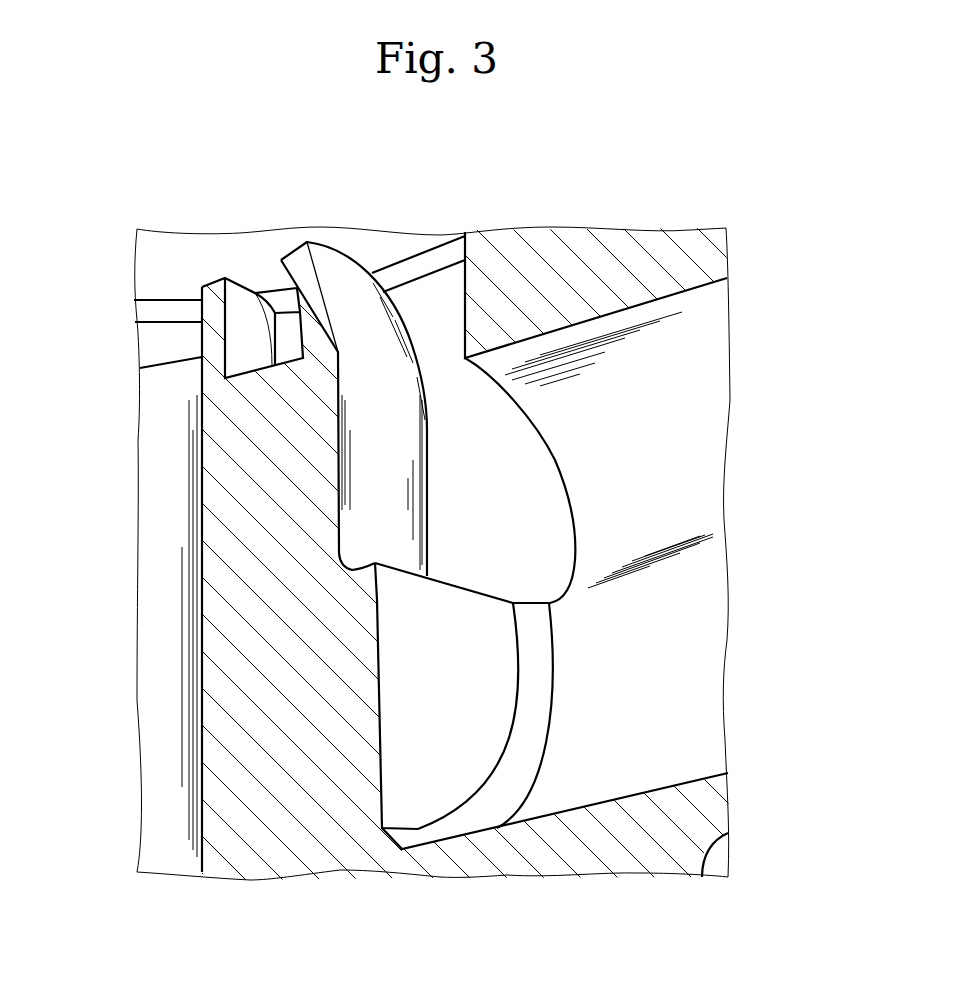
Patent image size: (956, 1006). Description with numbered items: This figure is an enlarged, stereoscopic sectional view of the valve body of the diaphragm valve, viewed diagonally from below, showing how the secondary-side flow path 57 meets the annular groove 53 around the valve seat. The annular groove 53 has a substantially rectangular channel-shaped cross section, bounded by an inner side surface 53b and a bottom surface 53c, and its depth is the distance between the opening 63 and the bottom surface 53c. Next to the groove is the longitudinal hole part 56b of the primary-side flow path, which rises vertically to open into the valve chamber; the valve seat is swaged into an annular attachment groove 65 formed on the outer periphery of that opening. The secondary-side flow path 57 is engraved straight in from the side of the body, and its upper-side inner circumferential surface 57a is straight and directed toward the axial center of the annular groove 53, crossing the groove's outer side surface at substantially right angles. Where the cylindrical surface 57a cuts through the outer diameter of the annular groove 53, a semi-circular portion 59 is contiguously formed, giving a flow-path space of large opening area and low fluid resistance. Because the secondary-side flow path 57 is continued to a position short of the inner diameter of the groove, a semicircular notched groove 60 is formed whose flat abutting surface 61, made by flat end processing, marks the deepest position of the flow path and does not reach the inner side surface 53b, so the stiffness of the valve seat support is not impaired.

The annular groove 53 is at (238, 358).
The inner side surface 53b is at (380, 448).
The bottom surface 53c is at (360, 566).
The longitudinal hole part 56b is at (147, 693).
The secondary-side flow path 57 is at (707, 652).
The upper-side inner circumferential surface 57a is at (700, 305).
The semi-circular portion 59 is at (543, 433).
The semicircular notched groove 60 is at (478, 813).
The abutting surface 61 is at (403, 775).
The opening 63 is at (197, 288).
The annular attachment groove 65 is at (255, 293).